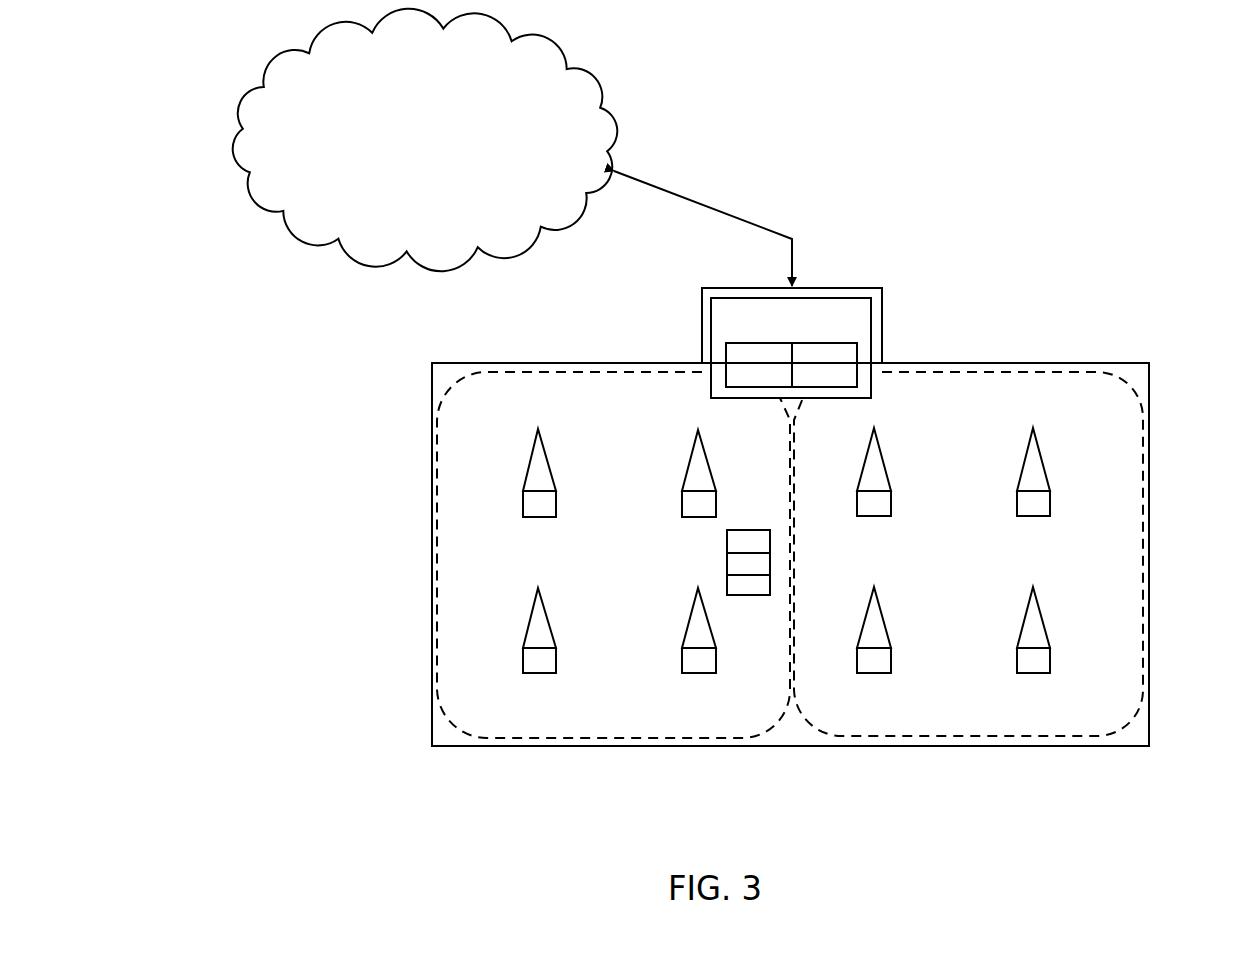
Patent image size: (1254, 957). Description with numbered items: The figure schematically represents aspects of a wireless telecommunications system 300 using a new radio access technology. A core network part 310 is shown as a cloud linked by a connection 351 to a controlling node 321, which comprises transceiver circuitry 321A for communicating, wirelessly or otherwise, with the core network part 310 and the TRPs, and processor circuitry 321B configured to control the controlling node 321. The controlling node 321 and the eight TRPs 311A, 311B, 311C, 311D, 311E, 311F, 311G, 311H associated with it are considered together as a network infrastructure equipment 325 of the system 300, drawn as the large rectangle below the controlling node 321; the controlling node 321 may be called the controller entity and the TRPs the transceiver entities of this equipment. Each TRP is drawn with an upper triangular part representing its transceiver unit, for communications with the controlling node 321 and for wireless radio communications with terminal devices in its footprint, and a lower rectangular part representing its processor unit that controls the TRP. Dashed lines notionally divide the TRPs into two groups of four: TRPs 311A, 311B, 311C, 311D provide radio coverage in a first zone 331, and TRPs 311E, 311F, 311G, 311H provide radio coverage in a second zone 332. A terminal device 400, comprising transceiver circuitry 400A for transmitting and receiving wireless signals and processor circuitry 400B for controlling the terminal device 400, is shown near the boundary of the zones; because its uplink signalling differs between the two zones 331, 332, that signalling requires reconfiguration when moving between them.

The wireless telecommunications system 300 is at (975, 187).
The core network part 310 is at (440, 147).
The TRP 311A is at (529, 457).
The TRP 311B is at (691, 455).
The TRP 311C is at (535, 603).
The TRP 311D is at (690, 615).
The TRP 311E is at (882, 448).
The TRP 311F is at (1025, 453).
The TRP 311G is at (888, 623).
The TRP 311H is at (1028, 610).
The controlling node 321 is at (817, 337).
The transceiver circuitry 321A is at (787, 377).
The processor circuitry 321B is at (853, 377).
The network infrastructure equipment 325 is at (1153, 369).
The first zone 331 is at (605, 740).
The second zone 332 is at (952, 736).
The communication link 351 is at (710, 178).
The terminal device 400 is at (745, 530).
The transceiver circuitry 400A is at (761, 582).
The processor circuitry 400B is at (727, 553).